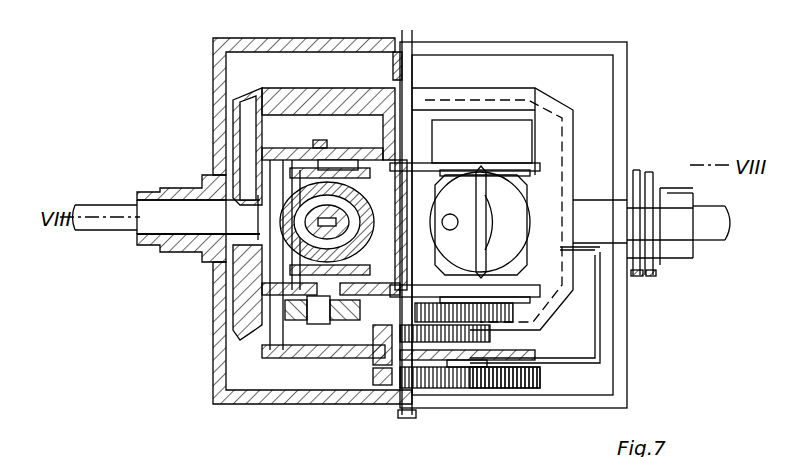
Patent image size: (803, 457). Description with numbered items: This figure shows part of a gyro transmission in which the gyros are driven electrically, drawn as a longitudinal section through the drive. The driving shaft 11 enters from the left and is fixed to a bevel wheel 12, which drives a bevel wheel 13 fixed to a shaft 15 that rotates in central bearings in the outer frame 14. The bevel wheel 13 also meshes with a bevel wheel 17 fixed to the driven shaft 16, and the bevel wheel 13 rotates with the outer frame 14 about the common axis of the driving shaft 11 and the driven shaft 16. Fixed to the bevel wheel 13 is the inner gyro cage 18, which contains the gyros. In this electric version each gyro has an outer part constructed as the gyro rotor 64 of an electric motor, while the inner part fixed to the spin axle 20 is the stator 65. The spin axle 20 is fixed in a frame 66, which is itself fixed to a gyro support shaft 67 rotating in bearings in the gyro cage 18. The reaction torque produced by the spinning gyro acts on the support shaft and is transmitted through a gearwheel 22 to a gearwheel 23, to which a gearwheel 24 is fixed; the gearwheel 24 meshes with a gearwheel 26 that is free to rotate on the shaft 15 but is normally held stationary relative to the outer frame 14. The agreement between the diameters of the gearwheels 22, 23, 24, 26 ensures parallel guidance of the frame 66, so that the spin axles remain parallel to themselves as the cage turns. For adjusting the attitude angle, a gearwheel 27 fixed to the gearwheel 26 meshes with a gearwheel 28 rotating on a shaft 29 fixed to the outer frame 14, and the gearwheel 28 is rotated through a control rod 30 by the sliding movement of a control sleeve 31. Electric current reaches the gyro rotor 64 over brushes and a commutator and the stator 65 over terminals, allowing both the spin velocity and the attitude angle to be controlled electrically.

The driving shaft 11 is at (196, 228).
The bevel wheel 12 is at (236, 124).
The bevel wheel 13 is at (322, 92).
The outer frame 14 is at (460, 47).
The shaft 15 is at (405, 90).
The driven shaft 16 is at (586, 208).
The bevel wheel 17 is at (555, 136).
The gyro cage 18 is at (372, 152).
The spin axle 20 is at (397, 192).
The gearwheel 22 is at (389, 320).
The gearwheel 23 is at (440, 290).
The gearwheel 24 is at (450, 340).
The gearwheel 26 is at (374, 333).
The gearwheel 27 is at (374, 376).
The gearwheel 28 is at (455, 390).
The shaft 29 is at (482, 382).
The control rod 30 is at (600, 347).
The control sleeve 31 is at (652, 275).
The gyro rotor 64 is at (345, 234).
The stator 65 is at (350, 213).
The frame 66 is at (348, 268).
The gyro support shaft 67 is at (320, 150).